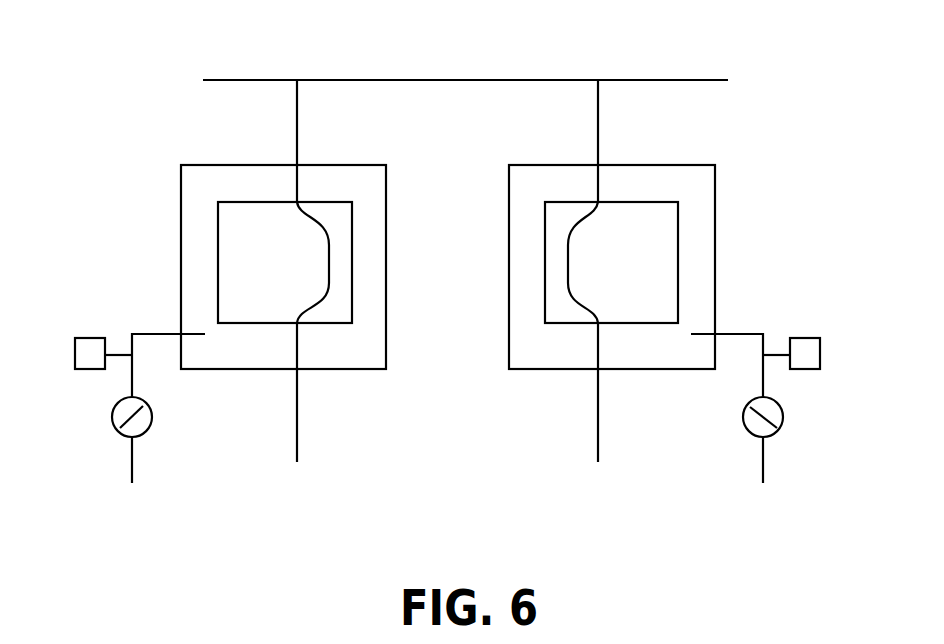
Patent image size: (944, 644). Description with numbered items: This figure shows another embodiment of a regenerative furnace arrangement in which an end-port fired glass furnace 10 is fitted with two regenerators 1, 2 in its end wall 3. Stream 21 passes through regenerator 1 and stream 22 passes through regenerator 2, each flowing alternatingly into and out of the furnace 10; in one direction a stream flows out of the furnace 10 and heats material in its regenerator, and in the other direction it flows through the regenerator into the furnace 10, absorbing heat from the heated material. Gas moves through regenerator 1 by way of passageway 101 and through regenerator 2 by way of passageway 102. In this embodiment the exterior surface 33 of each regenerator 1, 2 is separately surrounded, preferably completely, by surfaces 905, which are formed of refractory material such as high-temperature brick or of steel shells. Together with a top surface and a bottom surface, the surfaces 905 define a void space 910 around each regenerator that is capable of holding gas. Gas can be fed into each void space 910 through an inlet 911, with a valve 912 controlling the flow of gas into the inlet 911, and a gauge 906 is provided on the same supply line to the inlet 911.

The furnace 10 is at (432, 28).
The end wall 3 is at (453, 80).
The stream 21 is at (297, 115).
The stream 22 is at (598, 427).
The surfaces 905 is at (181, 252).
The void space 910 is at (224, 192).
The regenerator 1 is at (243, 260).
The regenerator 2 is at (658, 236).
The passageway 101 is at (329, 257).
The passageway 102 is at (568, 267).
The exterior surface 33 is at (355, 228).
The inlet 911 is at (163, 330).
The gauge 906 is at (88, 336).
The valve 912 is at (447, 440).